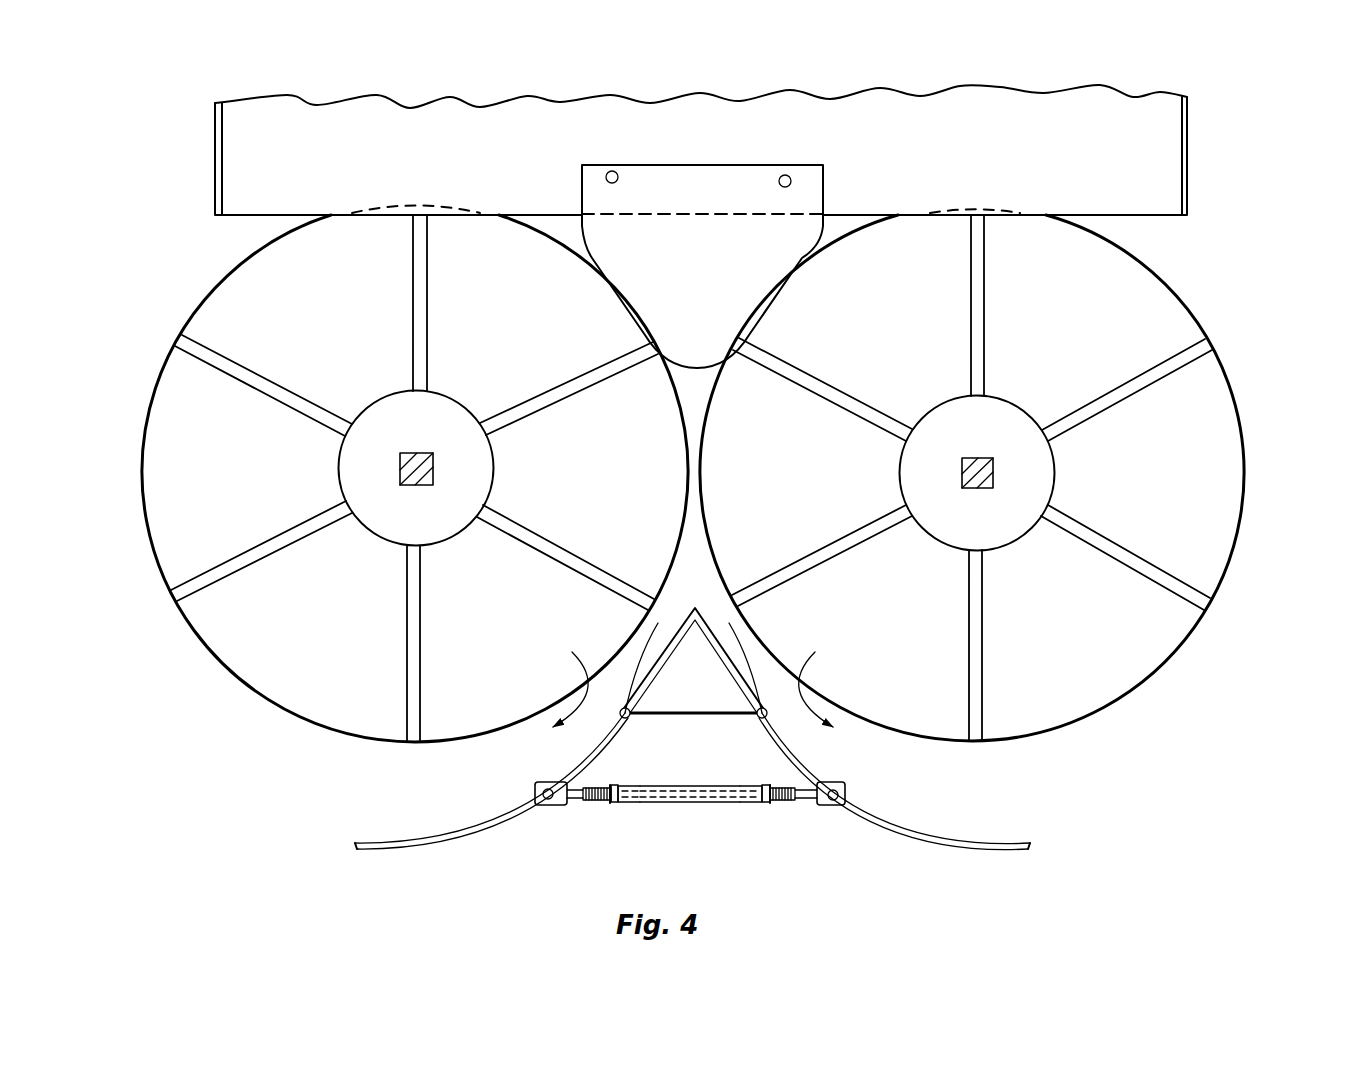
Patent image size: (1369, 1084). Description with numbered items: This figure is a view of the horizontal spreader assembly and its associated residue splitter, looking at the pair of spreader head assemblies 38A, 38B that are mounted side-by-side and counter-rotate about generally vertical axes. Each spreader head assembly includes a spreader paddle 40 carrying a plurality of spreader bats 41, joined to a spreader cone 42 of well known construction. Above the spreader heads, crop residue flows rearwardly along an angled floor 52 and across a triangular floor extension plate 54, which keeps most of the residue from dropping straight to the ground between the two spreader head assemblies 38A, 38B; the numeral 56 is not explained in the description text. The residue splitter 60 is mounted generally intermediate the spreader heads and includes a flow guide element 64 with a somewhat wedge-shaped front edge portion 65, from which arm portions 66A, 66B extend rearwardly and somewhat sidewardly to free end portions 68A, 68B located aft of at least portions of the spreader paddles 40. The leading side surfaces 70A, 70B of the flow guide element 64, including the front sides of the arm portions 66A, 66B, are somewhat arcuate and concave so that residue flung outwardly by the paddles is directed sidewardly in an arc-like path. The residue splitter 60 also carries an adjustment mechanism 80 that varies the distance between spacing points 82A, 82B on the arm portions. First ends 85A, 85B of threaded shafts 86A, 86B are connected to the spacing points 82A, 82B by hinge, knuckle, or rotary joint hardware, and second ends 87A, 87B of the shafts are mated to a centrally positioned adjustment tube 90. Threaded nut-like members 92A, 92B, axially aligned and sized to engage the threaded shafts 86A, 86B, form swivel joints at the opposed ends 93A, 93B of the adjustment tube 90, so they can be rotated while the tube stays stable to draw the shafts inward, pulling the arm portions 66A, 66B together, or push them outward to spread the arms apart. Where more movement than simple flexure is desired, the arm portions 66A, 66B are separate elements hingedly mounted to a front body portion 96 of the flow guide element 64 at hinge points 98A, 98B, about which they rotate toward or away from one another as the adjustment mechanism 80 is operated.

The spreader head assembly 38A is at (215, 246).
The spreader head assembly 38B is at (1180, 262).
The spreader paddle 40 is at (703, 473).
The spreader bat 41 is at (430, 268).
The spreader cone 42 is at (500, 470).
The angled floor 52 is at (277, 143).
The triangular floor extension plate 54 is at (700, 195).
The tire 56 is at (703, 473).
The residue splitter 60 is at (676, 724).
The flow guide element 64 is at (692, 620).
The front edge portion 65 is at (694, 615).
The arm portion 66A is at (422, 778).
The arm portion 66B is at (947, 771).
The free end portion 68A is at (345, 840).
The free end portion 68B is at (1028, 850).
The leading side surface 70A is at (400, 832).
The leading side surface 70B is at (905, 822).
The adjustment mechanism 80 is at (685, 827).
The spacing point 82A is at (538, 783).
The spacing point 82B is at (845, 782).
The first end 85A is at (573, 802).
The first end 85B is at (805, 803).
The threaded shaft 86A is at (585, 805).
The threaded shaft 86B is at (795, 805).
The second end 87A is at (636, 805).
The second end 87B is at (745, 805).
The adjustment tube 90 is at (697, 806).
The threaded nut-like member 92A is at (615, 785).
The threaded nut-like member 92B is at (765, 785).
The opposed end 93A is at (608, 805).
The opposed end 93B is at (770, 805).
The front body portion 96 is at (700, 643).
The hinge point 98A is at (547, 680).
The hinge point 98B is at (844, 680).